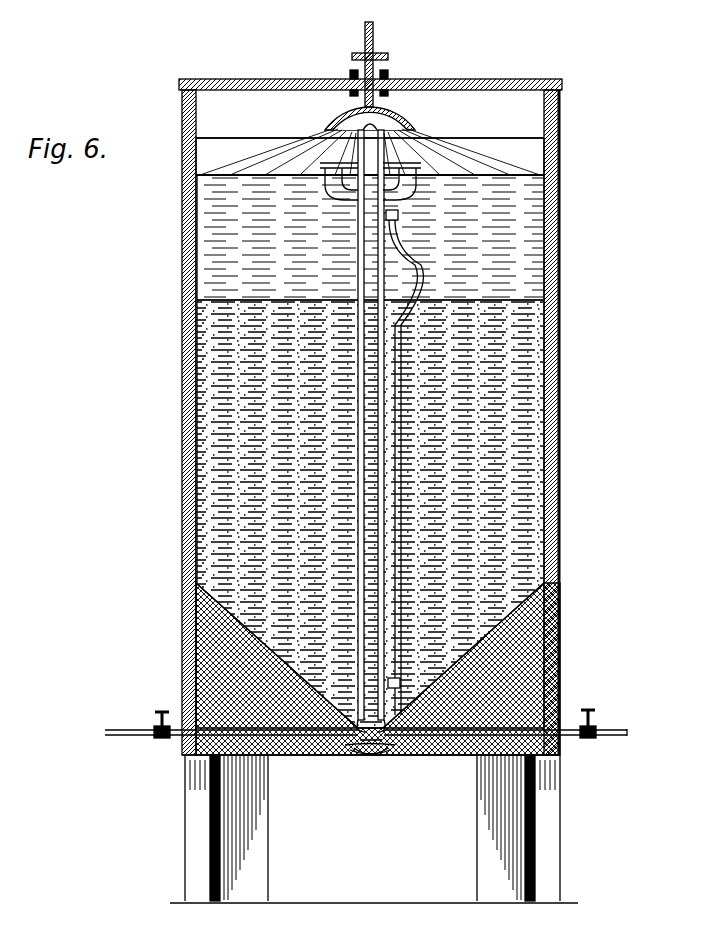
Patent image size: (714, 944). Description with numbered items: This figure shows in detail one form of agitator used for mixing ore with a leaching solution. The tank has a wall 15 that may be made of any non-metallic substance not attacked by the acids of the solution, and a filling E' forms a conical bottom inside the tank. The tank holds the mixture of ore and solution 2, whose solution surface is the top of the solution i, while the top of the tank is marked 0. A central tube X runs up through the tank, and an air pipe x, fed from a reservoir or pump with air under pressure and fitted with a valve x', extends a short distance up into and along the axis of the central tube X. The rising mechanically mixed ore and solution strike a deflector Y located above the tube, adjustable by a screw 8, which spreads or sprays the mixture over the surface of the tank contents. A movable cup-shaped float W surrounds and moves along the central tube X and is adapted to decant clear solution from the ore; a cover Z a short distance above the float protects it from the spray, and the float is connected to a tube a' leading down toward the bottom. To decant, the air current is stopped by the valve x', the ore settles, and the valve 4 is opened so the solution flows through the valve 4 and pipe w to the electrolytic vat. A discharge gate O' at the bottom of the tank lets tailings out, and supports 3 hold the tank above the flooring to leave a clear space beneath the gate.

The screw 8 is at (373, 38).
The deflector Y is at (410, 122).
The central tube X is at (386, 131).
The cover Z is at (420, 170).
The top of the tank 0 is at (258, 142).
The top of the solution i is at (512, 172).
The movable float W is at (420, 200).
The flexible tube a' is at (424, 462).
The filling E' is at (399, 403).
The wall of the tank 15 is at (546, 395).
The mixture of the ore and solution 2 is at (548, 490).
The valve 4 is at (592, 708).
The pipe w is at (622, 728).
The valve x' is at (140, 721).
The air pipe x is at (231, 749).
The discharge gate O' is at (370, 769).
The supports 3 is at (268, 828).